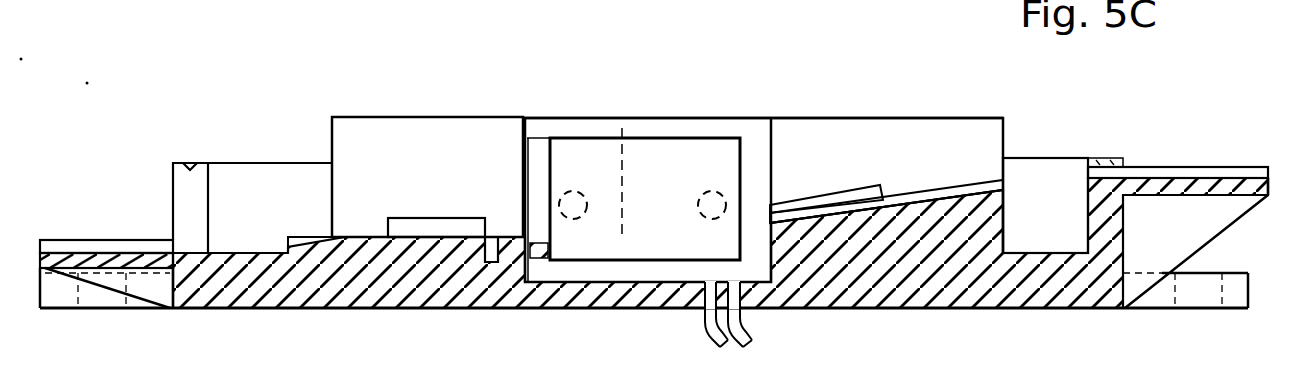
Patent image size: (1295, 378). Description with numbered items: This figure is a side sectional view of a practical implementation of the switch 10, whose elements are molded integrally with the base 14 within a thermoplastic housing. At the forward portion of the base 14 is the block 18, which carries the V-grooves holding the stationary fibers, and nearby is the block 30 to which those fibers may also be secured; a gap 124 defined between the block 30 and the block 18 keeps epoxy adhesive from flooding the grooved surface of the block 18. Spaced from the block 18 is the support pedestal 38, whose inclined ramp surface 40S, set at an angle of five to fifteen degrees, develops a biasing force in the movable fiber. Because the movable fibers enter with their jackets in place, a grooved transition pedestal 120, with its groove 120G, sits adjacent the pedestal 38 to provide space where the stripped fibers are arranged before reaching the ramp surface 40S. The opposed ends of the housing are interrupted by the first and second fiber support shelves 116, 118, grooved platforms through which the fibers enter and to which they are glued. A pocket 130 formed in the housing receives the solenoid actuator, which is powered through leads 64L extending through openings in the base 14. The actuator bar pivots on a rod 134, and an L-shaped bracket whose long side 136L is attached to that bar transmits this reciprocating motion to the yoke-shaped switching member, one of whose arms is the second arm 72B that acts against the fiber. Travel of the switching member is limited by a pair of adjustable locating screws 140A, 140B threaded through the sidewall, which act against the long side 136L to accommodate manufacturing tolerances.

The switch 10 is at (896, 94).
The base 14 is at (596, 290).
The block portion 18 is at (510, 256).
The block 30 is at (413, 258).
The support pedestal 38 is at (836, 244).
The ramp surface 40S is at (818, 207).
The leads 64L is at (730, 343).
The second arm 72B is at (540, 152).
The first fiber support shelf 116 is at (1178, 170).
The second fiber support shelf 118 is at (113, 240).
The transition pedestal 120 is at (940, 190).
The guide 120G is at (1008, 176).
The gap 124 is at (492, 237).
The pocket 130 is at (768, 134).
The rod 134 is at (622, 128).
The long side of bracket 136L is at (700, 152).
The locating screw 140A is at (578, 218).
The locating screw 140B is at (713, 190).